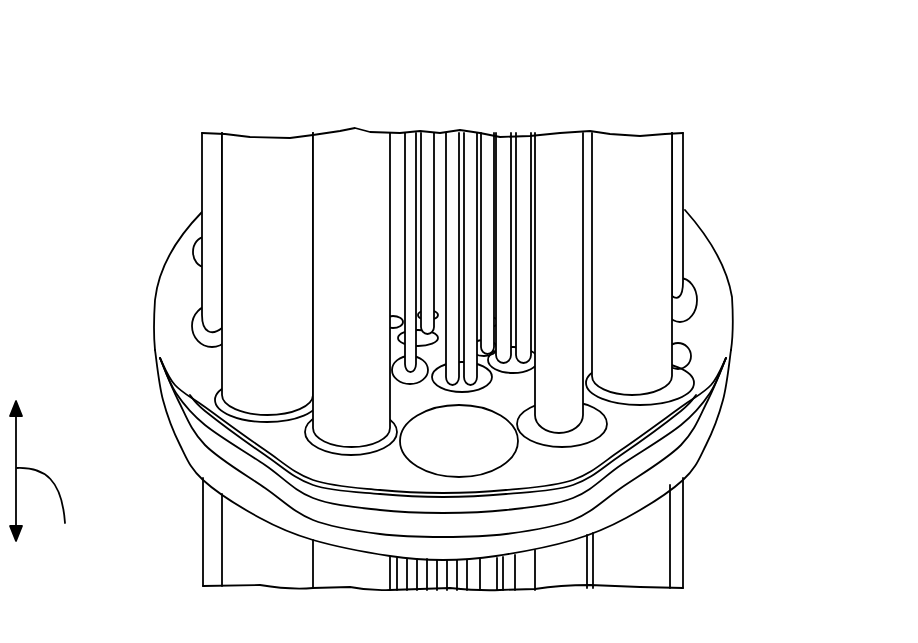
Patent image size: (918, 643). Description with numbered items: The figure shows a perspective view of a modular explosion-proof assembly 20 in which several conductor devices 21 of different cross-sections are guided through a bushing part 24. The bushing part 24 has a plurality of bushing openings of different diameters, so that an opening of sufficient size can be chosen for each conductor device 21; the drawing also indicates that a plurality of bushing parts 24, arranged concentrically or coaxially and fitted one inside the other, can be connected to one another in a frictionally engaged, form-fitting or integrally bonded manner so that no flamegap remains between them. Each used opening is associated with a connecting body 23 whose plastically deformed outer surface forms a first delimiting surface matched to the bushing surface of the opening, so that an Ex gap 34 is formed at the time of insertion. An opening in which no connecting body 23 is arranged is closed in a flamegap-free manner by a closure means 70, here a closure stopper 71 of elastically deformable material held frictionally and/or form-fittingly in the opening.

The explosion-proof assembly 20 is at (730, 122).
The conductor device 21 is at (207, 130).
The connecting body 23 is at (683, 348).
The bushing part 24 is at (700, 247).
The Ex gap 34 is at (198, 337).
The closure means 70 is at (630, 444).
The closure stopper 71 is at (468, 451).